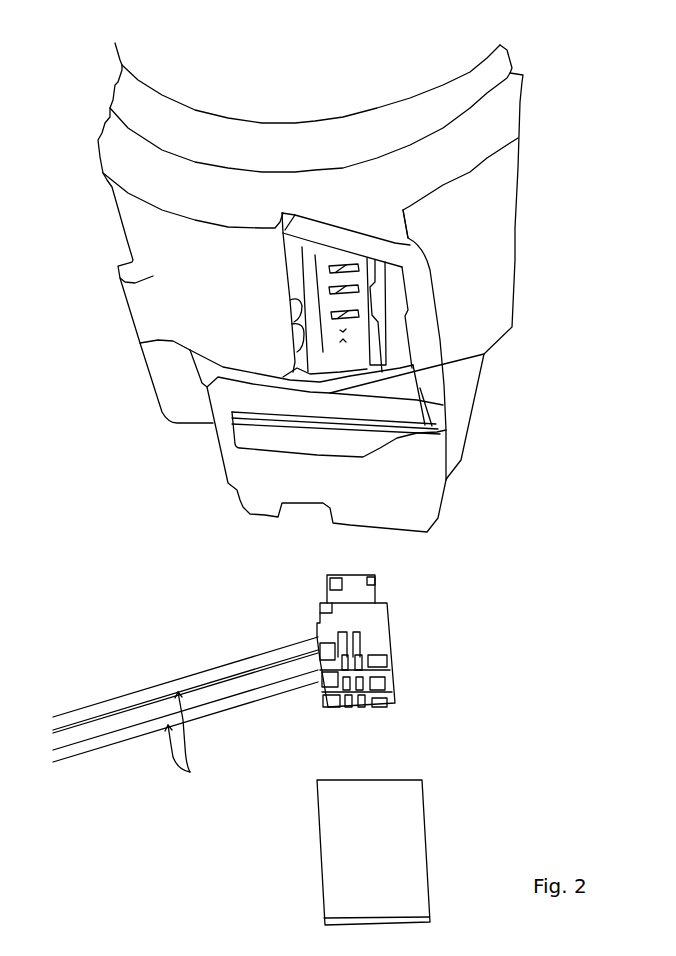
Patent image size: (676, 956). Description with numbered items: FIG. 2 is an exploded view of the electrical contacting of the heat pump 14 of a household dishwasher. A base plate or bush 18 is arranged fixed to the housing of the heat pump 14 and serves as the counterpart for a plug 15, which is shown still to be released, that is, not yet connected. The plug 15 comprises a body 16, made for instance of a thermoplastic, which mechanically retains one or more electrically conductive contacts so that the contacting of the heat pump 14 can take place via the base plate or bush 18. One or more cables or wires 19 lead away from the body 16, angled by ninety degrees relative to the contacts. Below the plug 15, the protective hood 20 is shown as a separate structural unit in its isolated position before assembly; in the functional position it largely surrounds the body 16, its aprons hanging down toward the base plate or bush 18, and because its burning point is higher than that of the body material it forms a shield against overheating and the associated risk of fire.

The heat pump 14 is at (373, 287).
The plug 15 is at (325, 673).
The body 16 is at (430, 592).
The base plate or bush 18 is at (520, 413).
The cables or wires 19 is at (185, 720).
The protective hood 20 is at (463, 793).